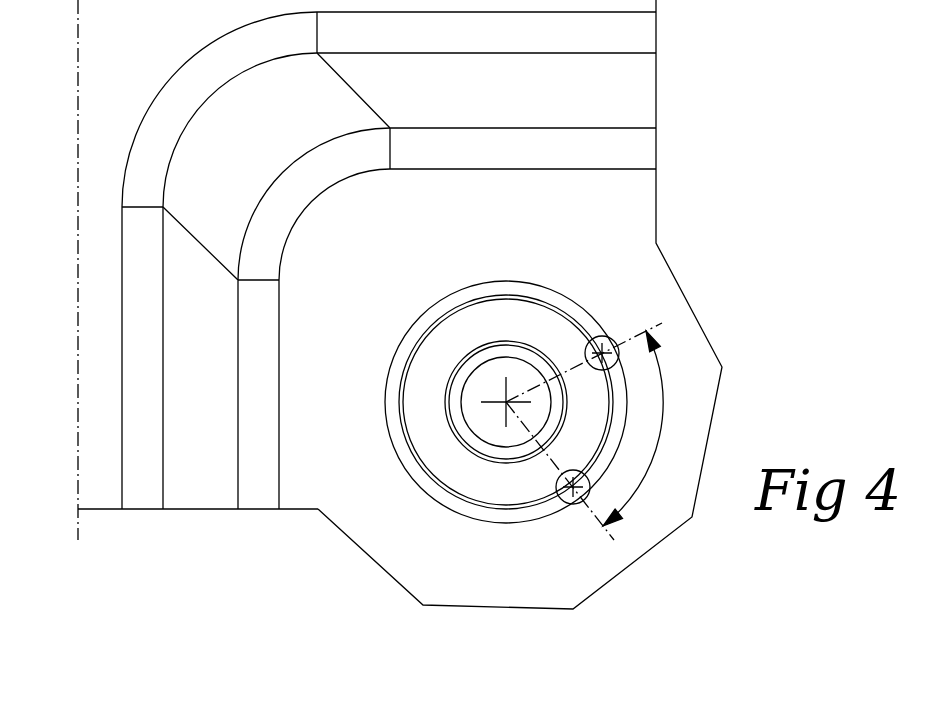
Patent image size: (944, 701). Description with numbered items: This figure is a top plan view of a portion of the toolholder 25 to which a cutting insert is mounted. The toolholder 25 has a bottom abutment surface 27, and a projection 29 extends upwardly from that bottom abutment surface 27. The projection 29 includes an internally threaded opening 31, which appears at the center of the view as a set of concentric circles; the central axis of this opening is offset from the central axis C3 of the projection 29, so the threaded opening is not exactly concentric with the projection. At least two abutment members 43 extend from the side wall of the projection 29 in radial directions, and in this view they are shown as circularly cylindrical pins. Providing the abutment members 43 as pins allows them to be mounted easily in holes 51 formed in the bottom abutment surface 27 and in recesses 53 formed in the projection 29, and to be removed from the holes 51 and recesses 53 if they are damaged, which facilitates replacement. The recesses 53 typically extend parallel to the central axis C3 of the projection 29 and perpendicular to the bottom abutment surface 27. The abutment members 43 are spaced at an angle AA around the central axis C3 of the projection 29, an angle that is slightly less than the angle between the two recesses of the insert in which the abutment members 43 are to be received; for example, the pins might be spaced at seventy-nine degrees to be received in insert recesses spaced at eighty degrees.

The toolholder 25 is at (198, 435).
The bottom abutment surface 27 is at (312, 457).
The projection 29 is at (447, 457).
The internally threaded opening 31 is at (485, 417).
The abutment members 43 is at (614, 356).
The holes 51 is at (613, 337).
The recesses 53 is at (607, 338).
The central axis of the projection C3 is at (506, 400).
The angle between abutment members AA is at (651, 428).